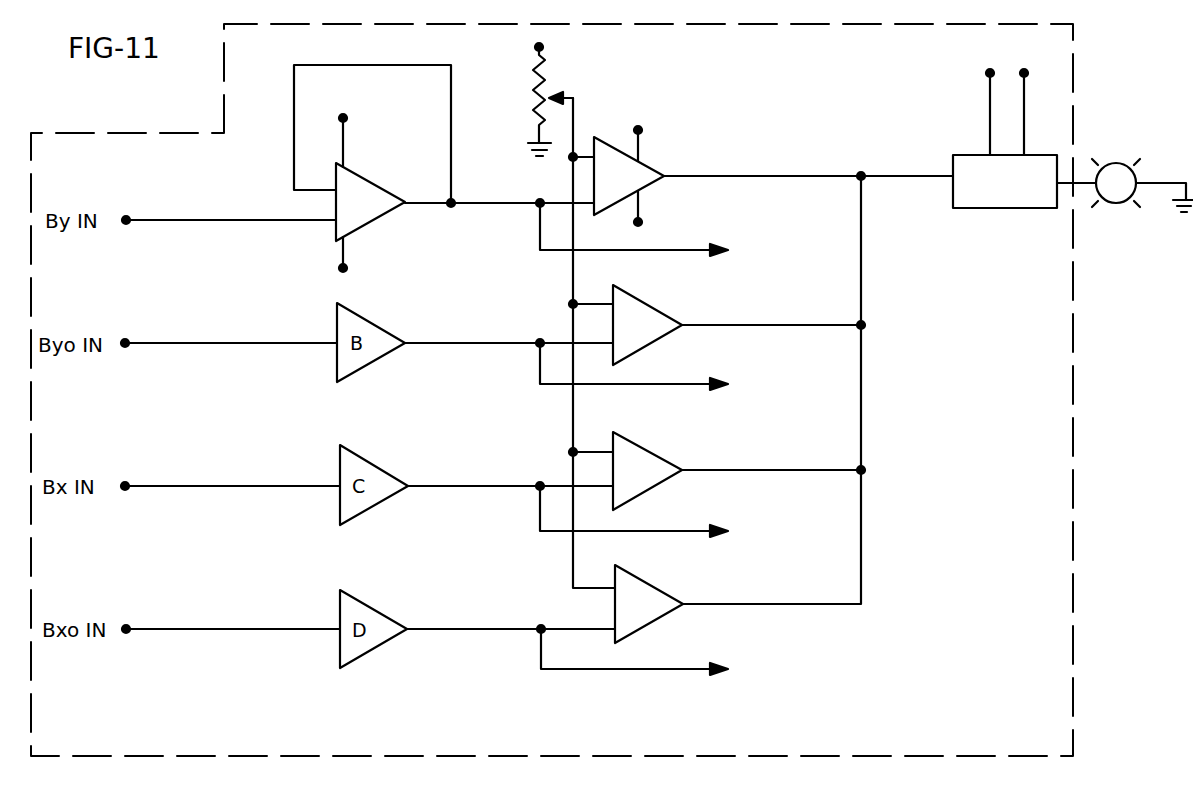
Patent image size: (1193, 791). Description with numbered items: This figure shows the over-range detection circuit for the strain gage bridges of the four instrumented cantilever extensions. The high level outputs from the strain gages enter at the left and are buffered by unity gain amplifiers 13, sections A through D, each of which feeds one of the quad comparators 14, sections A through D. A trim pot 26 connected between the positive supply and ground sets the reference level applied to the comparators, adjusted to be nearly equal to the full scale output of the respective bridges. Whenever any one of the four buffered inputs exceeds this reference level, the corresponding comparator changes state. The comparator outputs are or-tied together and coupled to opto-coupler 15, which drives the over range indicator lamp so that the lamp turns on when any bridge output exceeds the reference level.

The unity gain amplifiers 13 is at (444, 171).
The quad comparators 14 is at (679, 396).
The trim pot 26 is at (553, 307).
The opto-coupler 15 is at (1070, 140).